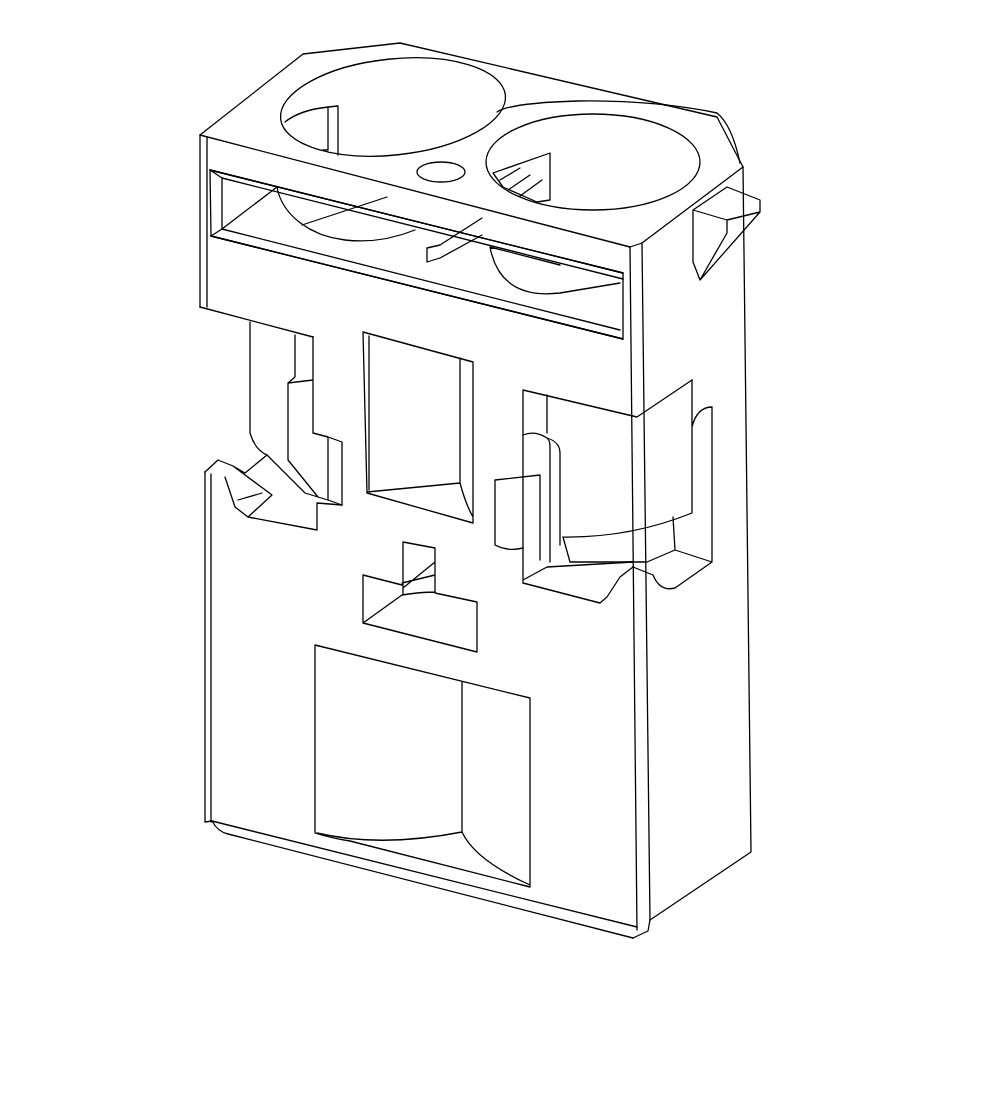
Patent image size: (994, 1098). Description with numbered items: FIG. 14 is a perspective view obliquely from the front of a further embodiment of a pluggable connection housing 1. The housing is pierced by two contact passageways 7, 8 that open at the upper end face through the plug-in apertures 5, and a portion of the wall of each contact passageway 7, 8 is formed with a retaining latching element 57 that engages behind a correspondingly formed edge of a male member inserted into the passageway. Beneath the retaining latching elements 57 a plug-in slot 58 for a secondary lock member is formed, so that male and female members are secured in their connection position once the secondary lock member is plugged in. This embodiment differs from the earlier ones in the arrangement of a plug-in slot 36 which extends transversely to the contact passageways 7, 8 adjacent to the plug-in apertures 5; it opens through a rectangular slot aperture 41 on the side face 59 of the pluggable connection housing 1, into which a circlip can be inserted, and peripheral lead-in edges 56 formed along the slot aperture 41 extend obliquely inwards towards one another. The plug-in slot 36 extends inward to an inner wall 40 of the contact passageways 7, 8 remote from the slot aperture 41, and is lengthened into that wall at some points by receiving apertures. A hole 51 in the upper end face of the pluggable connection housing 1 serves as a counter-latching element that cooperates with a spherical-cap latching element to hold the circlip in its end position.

The pluggable connection housing 1 is at (820, 434).
The plug-in apertures 5 is at (296, 80).
The contact passageway 7 is at (575, 292).
The contact passageway 8 is at (355, 236).
The plug-in slot 36 is at (190, 212).
The inner wall 40 is at (420, 93).
The slot aperture 41 is at (228, 197).
The hole 51 is at (443, 167).
The lead-in edges 56 is at (247, 240).
The retaining latching element 57 is at (268, 378).
The plug-in slot for a secondary lock member 58 is at (393, 607).
The side face 59 is at (572, 663).